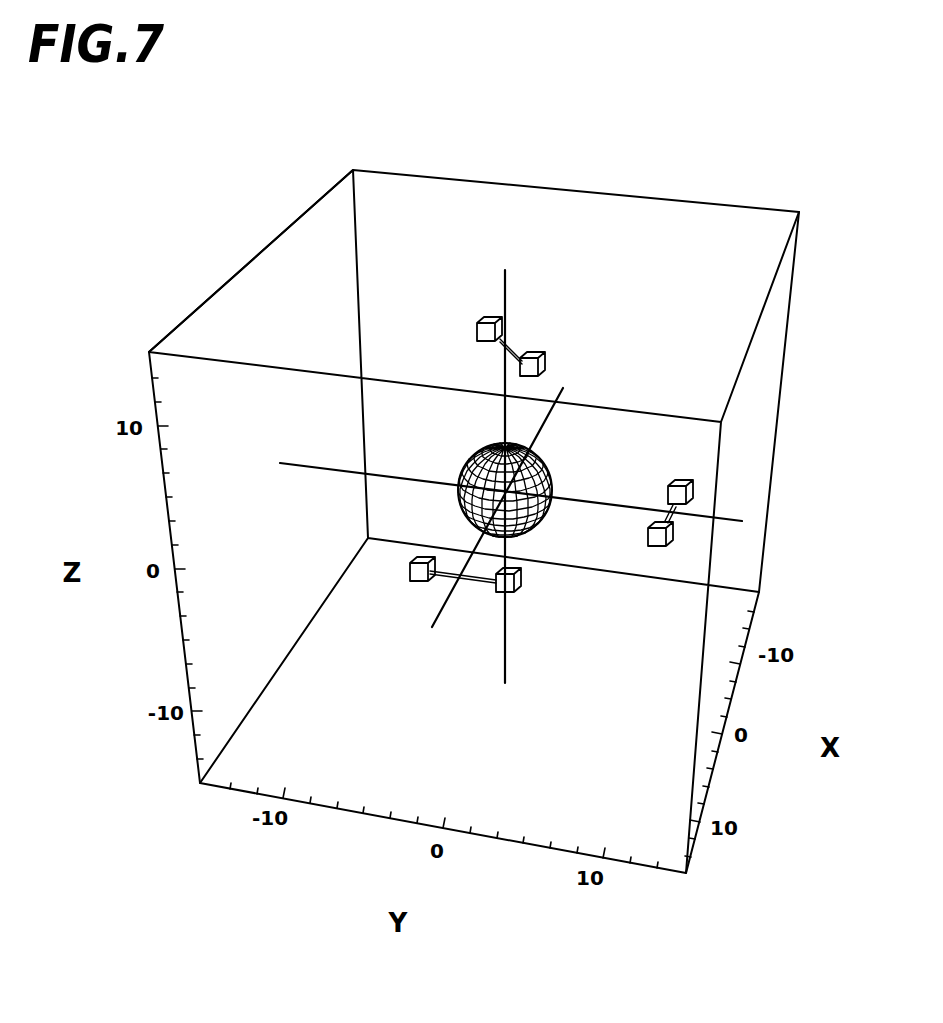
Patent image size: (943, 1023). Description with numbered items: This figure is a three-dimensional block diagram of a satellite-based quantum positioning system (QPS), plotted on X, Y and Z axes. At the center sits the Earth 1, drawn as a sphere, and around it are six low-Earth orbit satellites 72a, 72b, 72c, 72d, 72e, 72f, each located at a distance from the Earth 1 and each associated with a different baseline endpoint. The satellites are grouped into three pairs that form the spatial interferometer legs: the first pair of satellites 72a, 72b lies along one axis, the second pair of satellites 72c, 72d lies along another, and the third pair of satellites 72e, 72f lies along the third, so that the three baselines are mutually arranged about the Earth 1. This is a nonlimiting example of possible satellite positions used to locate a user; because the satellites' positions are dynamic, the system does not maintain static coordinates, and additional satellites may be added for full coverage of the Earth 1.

The Earth 1 is at (462, 468).
The low-Earth orbit satellite 72a is at (418, 583).
The low-Earth orbit satellite 72b is at (512, 592).
The low-Earth orbit satellite 72c is at (648, 542).
The low-Earth orbit satellite 72d is at (668, 490).
The low-Earth orbit satellite 72e is at (538, 355).
The low-Earth orbit satellite 72f is at (477, 332).